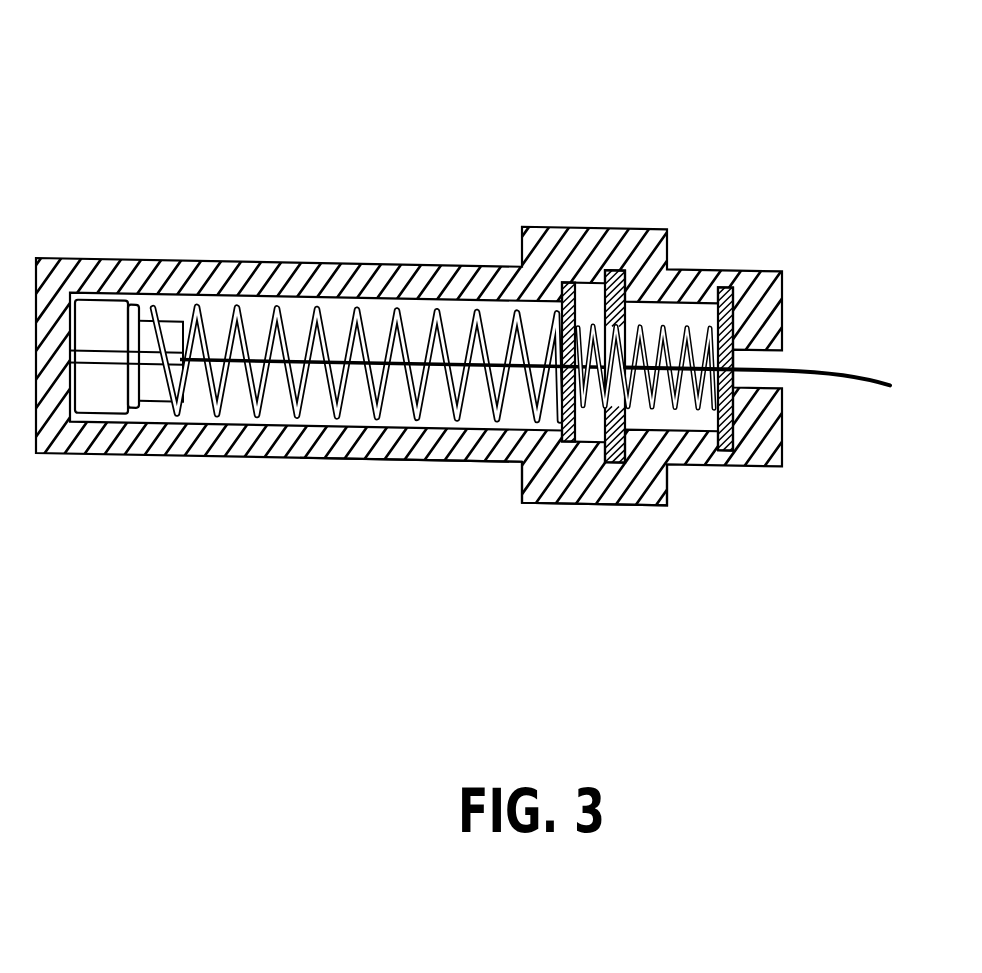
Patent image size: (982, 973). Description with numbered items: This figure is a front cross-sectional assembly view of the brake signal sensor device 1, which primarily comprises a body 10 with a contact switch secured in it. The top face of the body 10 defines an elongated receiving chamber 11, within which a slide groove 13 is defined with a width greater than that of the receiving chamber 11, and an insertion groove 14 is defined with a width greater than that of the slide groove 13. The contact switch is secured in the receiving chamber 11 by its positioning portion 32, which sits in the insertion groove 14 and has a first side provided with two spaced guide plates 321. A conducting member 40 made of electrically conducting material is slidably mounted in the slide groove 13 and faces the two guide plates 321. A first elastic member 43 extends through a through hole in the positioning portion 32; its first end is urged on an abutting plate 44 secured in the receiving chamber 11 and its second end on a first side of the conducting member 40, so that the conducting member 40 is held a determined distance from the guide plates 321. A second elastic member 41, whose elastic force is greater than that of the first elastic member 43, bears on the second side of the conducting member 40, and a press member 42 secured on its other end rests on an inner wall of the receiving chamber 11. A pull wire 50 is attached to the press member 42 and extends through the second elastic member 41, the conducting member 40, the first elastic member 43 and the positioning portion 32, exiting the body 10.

The brake signal sensor device 1 is at (409, 123).
The body 10 is at (484, 268).
The receiving chamber 11 is at (378, 301).
The slide groove 13 is at (508, 464).
The insertion groove 14 is at (645, 460).
The positioning portion 32 is at (612, 283).
The guide plates 321 is at (597, 447).
The conducting member 40 is at (568, 290).
The second elastic member 41 is at (280, 310).
The press member 42 is at (118, 308).
The first elastic member 43 is at (665, 330).
The abutting plate 44 is at (728, 300).
The pull wire 50 is at (812, 375).